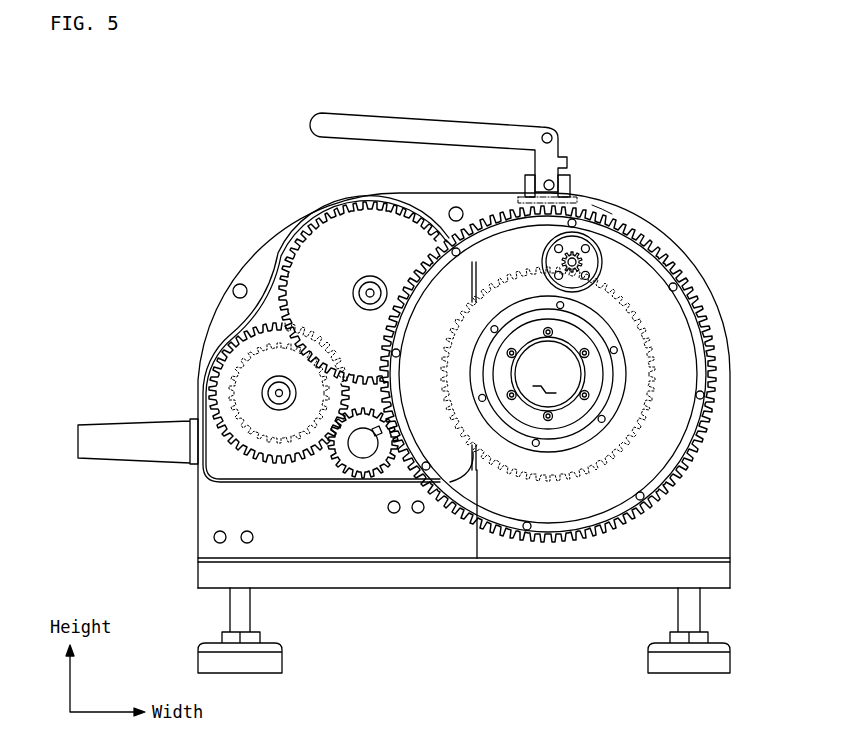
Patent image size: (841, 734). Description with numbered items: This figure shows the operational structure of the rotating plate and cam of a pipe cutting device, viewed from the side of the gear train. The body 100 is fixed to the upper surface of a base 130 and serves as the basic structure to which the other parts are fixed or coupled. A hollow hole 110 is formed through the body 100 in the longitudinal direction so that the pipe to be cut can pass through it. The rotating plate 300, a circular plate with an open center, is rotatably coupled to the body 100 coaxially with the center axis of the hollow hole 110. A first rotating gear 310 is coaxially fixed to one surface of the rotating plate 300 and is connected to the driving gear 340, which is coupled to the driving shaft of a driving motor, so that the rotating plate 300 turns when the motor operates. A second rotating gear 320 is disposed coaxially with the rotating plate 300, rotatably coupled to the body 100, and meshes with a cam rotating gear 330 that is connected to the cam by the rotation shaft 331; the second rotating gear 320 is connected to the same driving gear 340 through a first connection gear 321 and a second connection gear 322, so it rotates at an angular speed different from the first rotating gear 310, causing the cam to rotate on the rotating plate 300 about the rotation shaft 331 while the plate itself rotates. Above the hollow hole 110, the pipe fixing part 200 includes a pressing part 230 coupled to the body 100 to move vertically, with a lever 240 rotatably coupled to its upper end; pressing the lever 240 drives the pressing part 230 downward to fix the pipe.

The body 100 is at (292, 222).
The hollow hole 110 is at (533, 386).
The base 130 is at (550, 577).
The pipe fixing part 200 is at (573, 402).
The pressing part 230 is at (572, 185).
The lever 240 is at (438, 135).
The rotating plate 300 is at (693, 337).
The first rotating gear 310 is at (687, 267).
The second rotating gear 320 is at (657, 343).
The 2-1 connection gear 321 is at (224, 377).
The 2-2 connection gear 322 is at (322, 270).
The cam rotating gear 330 is at (600, 213).
The rotation shaft 331 is at (555, 237).
The driving gear 340 is at (360, 460).